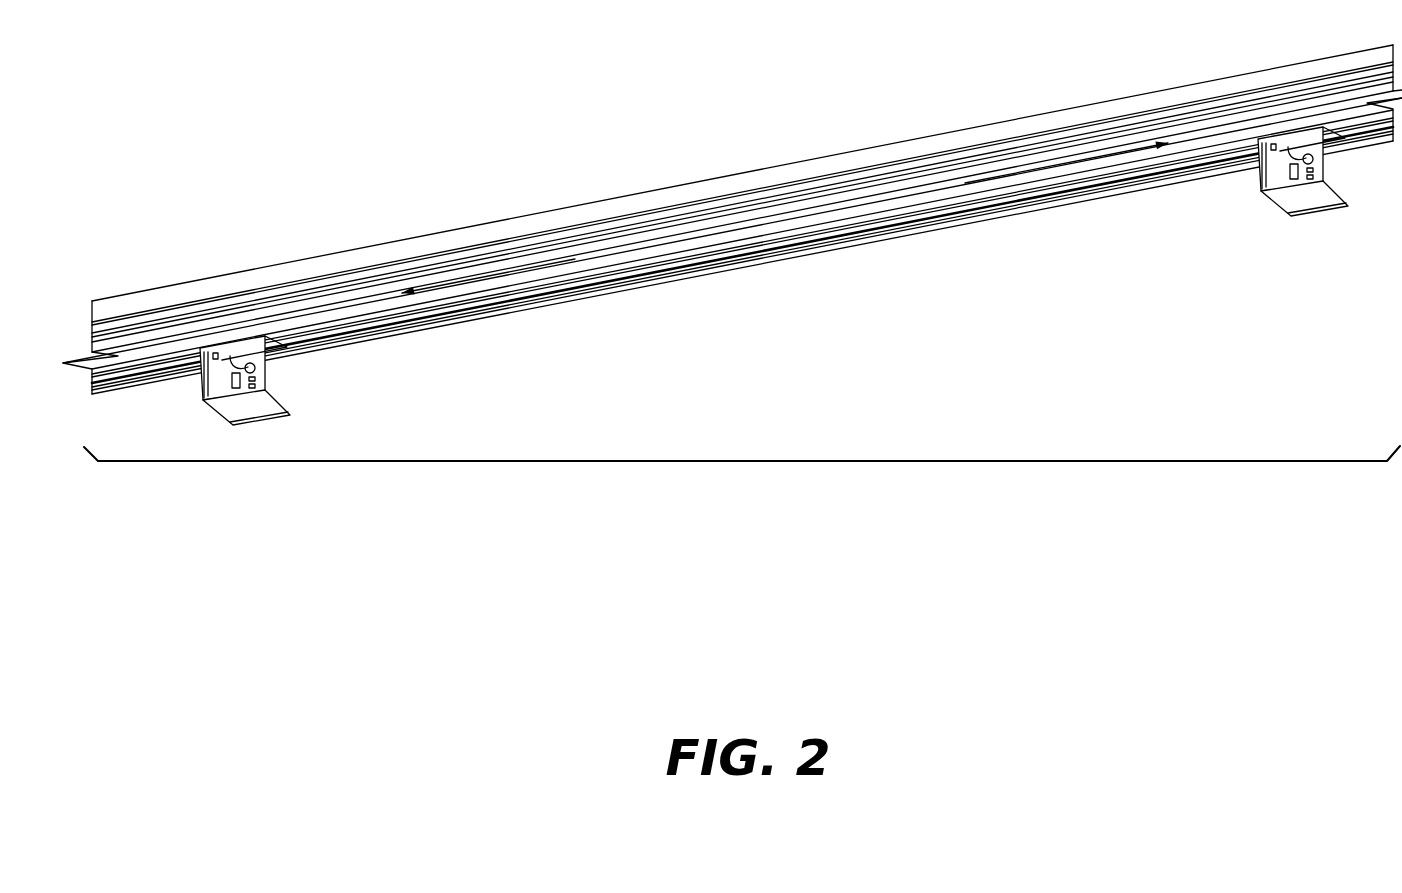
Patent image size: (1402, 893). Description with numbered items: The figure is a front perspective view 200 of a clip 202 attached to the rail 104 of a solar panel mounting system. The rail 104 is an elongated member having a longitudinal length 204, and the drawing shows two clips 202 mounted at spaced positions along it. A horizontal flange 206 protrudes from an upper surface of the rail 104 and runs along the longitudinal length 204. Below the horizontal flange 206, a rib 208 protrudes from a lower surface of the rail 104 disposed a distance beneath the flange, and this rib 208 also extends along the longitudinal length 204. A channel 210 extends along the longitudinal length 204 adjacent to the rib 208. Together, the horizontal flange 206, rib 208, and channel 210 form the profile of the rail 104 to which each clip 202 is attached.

The rail 104 is at (732, 219).
The front perspective view 200 is at (672, 462).
The clip 202 is at (198, 395).
The longitudinal length 204 is at (815, 215).
The horizontal flange 206 is at (697, 192).
The rib 208 is at (710, 258).
The channel 210 is at (783, 253).